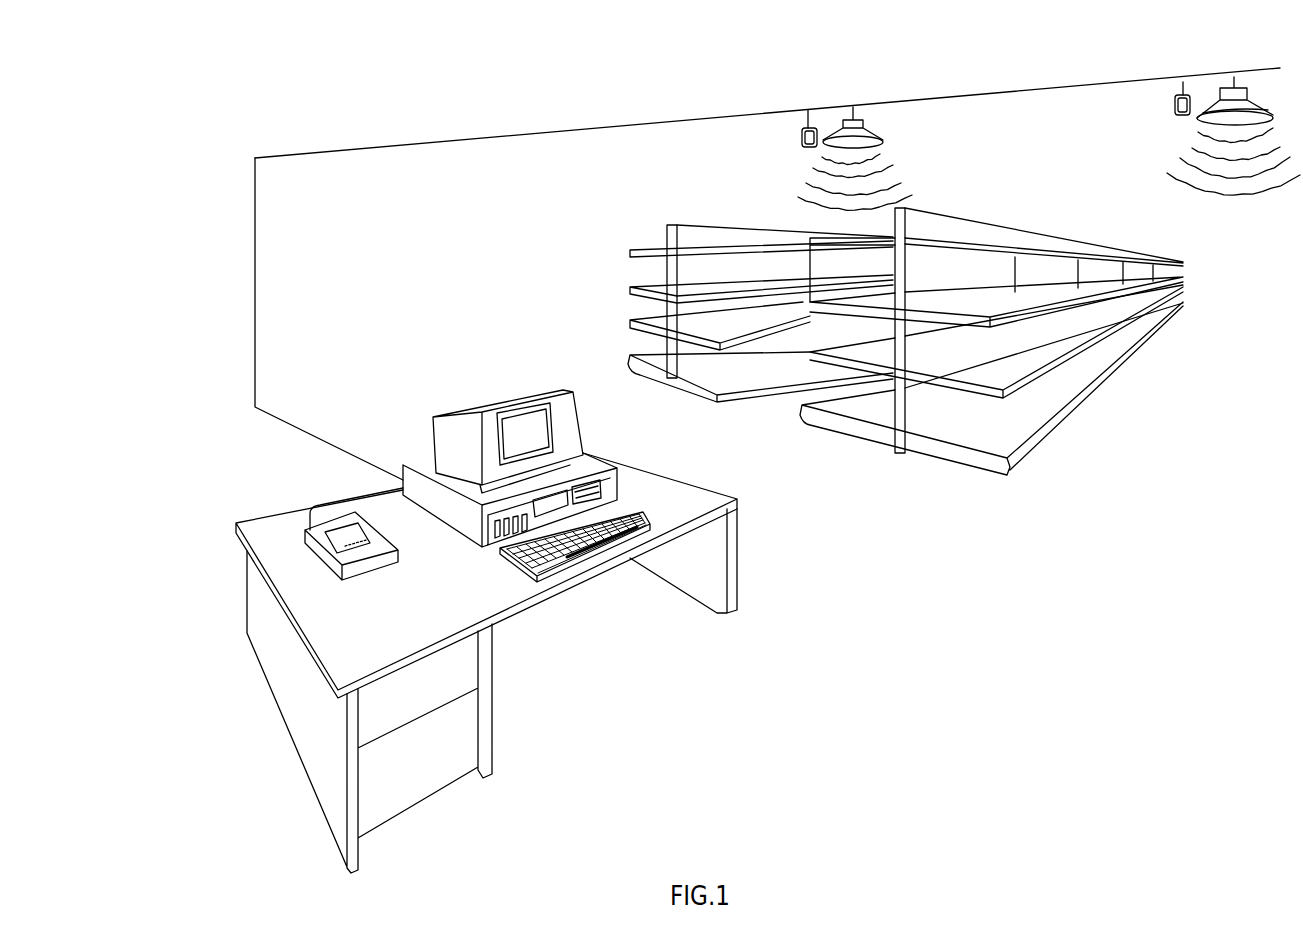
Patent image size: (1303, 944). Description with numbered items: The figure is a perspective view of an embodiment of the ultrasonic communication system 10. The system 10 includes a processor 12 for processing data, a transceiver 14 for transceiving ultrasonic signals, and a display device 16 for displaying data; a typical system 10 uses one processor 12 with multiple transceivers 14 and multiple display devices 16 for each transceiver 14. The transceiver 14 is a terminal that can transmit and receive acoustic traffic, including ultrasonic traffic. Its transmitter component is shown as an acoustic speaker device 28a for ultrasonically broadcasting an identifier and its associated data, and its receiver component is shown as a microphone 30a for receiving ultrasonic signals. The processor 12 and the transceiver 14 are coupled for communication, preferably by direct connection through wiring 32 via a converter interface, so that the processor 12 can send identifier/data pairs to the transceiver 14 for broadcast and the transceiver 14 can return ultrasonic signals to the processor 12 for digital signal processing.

The ultrasonic communication system 10 is at (168, 204).
The processor 12 is at (407, 403).
The transceiver 14 is at (828, 86).
The display device 16 is at (1057, 432).
The acoustic speaker device 28a is at (863, 132).
The microphone 30a is at (802, 138).
The wiring 32 is at (255, 337).